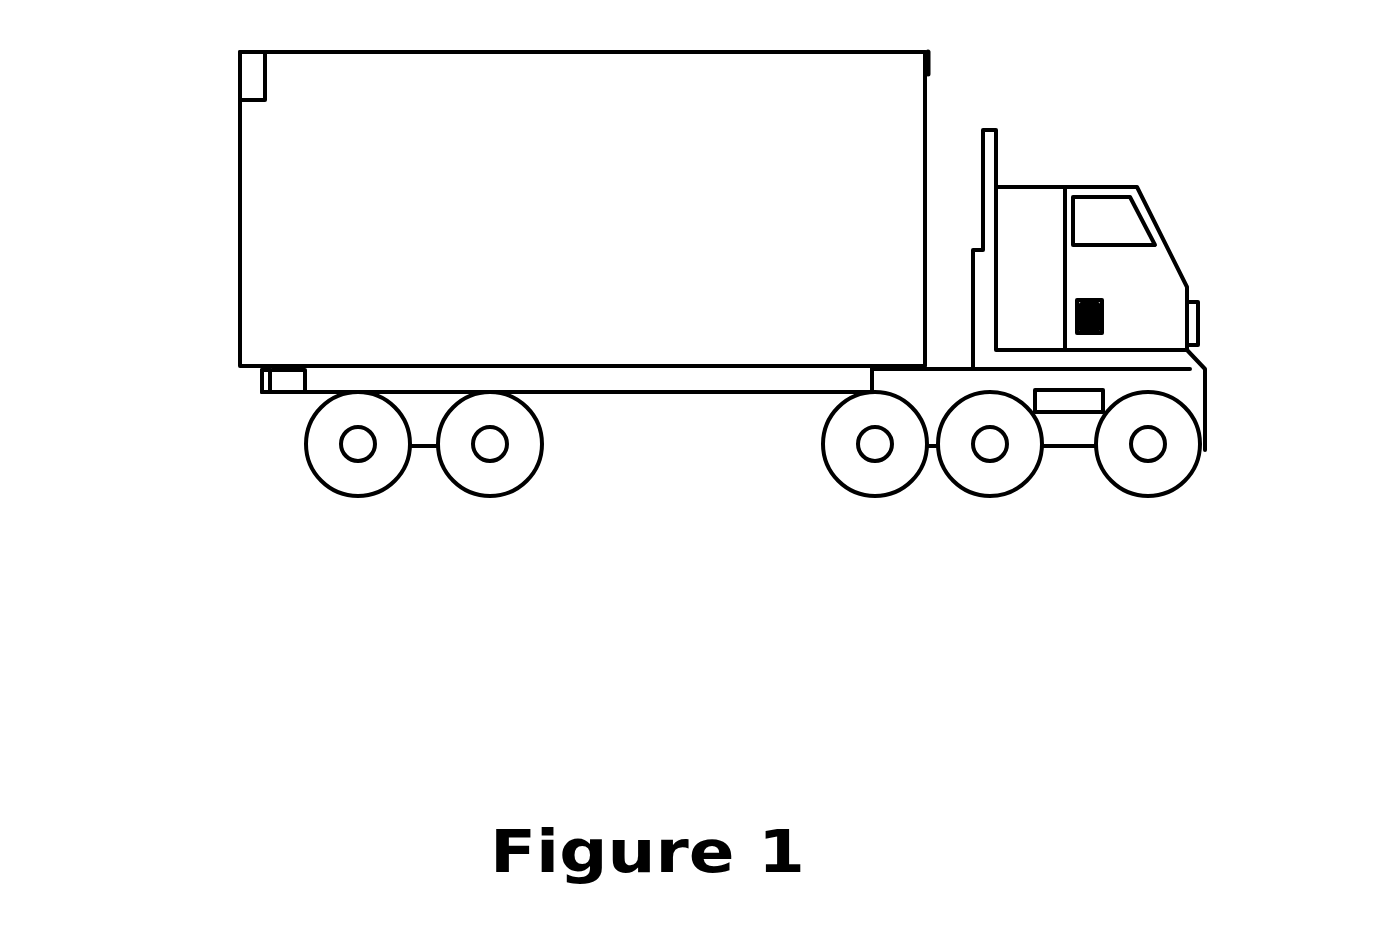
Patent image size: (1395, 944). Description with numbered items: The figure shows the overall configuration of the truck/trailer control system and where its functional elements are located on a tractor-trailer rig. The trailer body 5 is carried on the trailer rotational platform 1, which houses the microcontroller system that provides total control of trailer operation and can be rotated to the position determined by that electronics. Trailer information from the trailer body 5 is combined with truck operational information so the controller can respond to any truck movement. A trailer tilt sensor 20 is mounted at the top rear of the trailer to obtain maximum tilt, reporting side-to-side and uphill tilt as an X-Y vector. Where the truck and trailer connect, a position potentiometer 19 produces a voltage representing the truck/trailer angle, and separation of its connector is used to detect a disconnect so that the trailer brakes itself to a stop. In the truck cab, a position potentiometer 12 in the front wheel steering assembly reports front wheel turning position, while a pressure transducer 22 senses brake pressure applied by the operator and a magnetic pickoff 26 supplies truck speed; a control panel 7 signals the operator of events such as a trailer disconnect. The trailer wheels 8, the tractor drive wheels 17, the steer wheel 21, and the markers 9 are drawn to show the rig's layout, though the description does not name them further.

The trailer rotational platform 1 is at (323, 377).
The trailer body 5 is at (763, 375).
The control panel 7 is at (1153, 272).
The trailer wheels 8 is at (483, 447).
The sensor mounting locations 9 is at (928, 60).
The position potentiometer 12 is at (1167, 378).
The tractor drive wheels 17 is at (990, 445).
The position potentiometer 19 is at (907, 382).
The trailer tilt sensor 20 is at (252, 68).
The tractor steer wheel 21 is at (1165, 445).
The pressure transducer 22 is at (1165, 322).
The magnetic pickoff 26 is at (1077, 402).